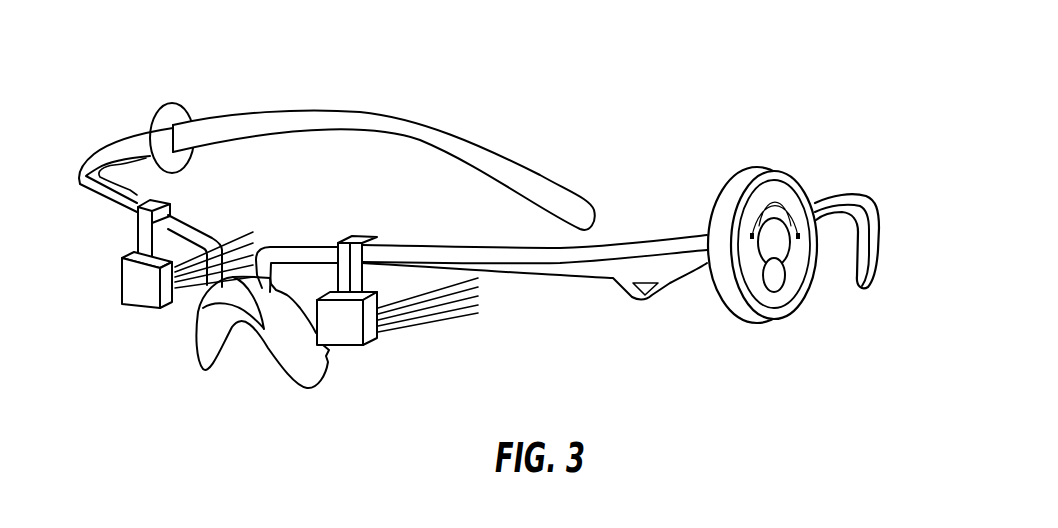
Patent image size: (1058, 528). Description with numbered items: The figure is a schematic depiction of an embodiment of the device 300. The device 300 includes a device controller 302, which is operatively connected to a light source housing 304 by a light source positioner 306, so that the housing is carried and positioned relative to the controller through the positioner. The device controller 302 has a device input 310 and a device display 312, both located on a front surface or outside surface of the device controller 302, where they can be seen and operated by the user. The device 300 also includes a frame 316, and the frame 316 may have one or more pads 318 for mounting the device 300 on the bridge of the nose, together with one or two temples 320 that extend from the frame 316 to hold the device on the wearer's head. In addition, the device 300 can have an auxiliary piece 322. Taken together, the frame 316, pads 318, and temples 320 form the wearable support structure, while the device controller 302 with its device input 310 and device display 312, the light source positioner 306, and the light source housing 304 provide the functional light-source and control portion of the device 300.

The device 300 is at (690, 54).
The device controller 302 is at (828, 180).
The light source housing 304 is at (340, 335).
The light source positioner 306 is at (358, 240).
The device input 310 is at (779, 287).
The device display 312 is at (797, 202).
The frame 316 is at (604, 246).
The pads 318 is at (208, 351).
The temples 320 is at (467, 135).
The auxiliary piece 322 is at (138, 116).